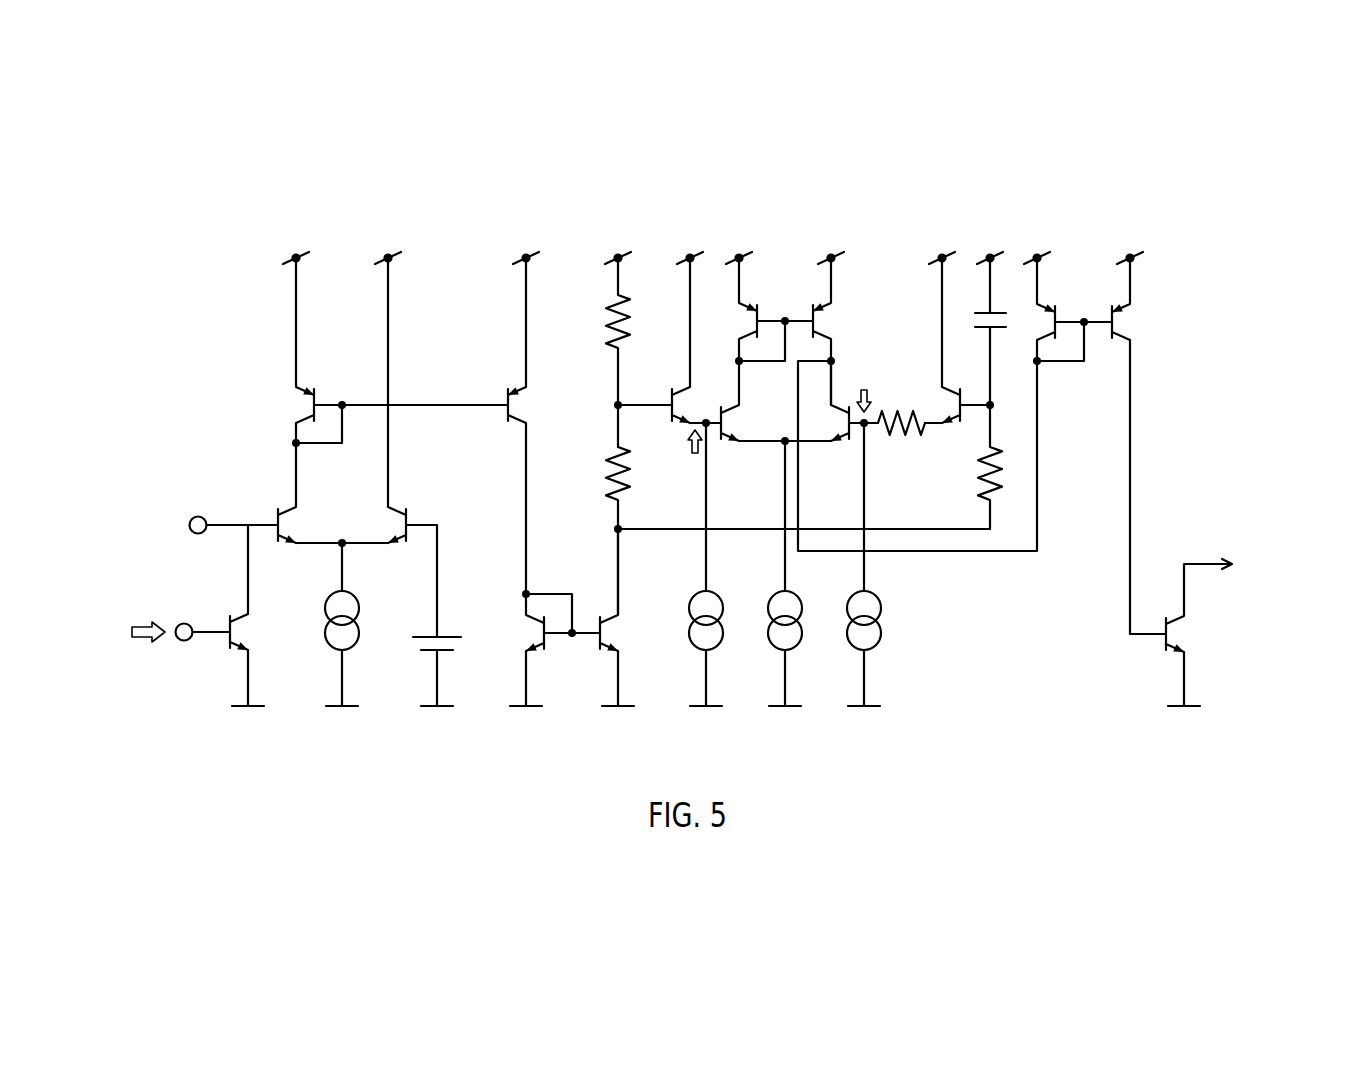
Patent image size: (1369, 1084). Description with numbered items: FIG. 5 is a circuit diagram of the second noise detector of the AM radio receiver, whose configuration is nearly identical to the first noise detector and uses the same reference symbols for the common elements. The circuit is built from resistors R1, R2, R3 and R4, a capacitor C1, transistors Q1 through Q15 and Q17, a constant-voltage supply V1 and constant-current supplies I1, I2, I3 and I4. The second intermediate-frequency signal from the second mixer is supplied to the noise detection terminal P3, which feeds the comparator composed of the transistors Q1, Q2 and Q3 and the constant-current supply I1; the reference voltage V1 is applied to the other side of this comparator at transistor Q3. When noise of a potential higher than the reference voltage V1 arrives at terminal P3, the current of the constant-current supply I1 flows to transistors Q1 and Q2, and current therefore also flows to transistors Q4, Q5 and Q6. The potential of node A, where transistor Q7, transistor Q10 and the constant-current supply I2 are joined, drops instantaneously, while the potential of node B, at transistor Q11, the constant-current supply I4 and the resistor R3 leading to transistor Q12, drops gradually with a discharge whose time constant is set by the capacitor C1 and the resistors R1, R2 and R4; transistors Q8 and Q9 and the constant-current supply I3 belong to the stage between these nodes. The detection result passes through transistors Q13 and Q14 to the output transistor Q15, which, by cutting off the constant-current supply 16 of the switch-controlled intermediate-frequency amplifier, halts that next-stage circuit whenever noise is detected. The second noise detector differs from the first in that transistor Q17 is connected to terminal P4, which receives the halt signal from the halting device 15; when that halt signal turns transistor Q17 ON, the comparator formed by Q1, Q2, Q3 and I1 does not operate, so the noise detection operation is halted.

The transistor Q1 is at (389, 350).
The transistor Q2 is at (274, 493).
The transistor Q3 is at (389, 447).
The transistor Q4 is at (528, 426).
The transistor Q5 is at (552, 650).
The transistor Q6 is at (620, 617).
The transistor Q7 is at (669, 340).
The transistor Q8 is at (765, 309).
The transistor Q9 is at (833, 331).
The transistor Q10 is at (776, 401).
The transistor Q11 is at (839, 401).
The transistor Q12 is at (949, 340).
The transistor Q13 is at (1074, 309).
The transistor Q14 is at (1140, 304).
The transistor Q15 is at (1199, 632).
The transistor Q17 is at (237, 660).
The resistor R1 is at (603, 352).
The resistor R2 is at (603, 531).
The resistor R3 is at (894, 437).
The resistor R4 is at (976, 467).
The capacitor C1 is at (983, 331).
The constant-voltage supply V1 is at (441, 656).
The constant-current supply I1 is at (351, 624).
The constant-current supply I2 is at (716, 564).
The constant-current supply I3 is at (796, 573).
The constant-current supply I4 is at (875, 564).
The noise detection terminal P3 is at (189, 525).
The terminal P4 is at (184, 641).
The node A is at (695, 454).
The node B is at (864, 388).
The halting device 15 is at (113, 594).
The constant-current supply of the switch-controlled intermediate-frequency amplifie 16 is at (1239, 483).